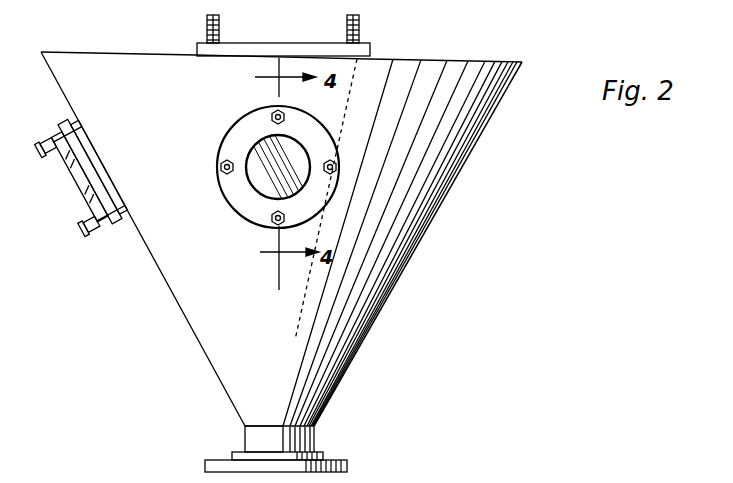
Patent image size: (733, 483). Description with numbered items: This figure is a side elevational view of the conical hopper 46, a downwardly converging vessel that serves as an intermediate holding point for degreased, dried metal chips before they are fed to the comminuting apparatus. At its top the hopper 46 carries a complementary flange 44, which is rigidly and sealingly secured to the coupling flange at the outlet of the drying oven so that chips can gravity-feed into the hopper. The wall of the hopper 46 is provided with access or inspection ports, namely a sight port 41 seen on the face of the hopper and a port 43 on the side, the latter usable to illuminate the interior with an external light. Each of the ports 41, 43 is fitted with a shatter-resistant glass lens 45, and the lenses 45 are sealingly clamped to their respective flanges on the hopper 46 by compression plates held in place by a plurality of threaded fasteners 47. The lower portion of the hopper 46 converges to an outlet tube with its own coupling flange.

The sight port 41 is at (312, 196).
The port 43 is at (72, 178).
The complementary flange 44 is at (370, 47).
The shatter-resistant glass lenses 45 is at (293, 151).
The conical hopper 46 is at (390, 291).
The threaded fasteners 47 is at (88, 234).